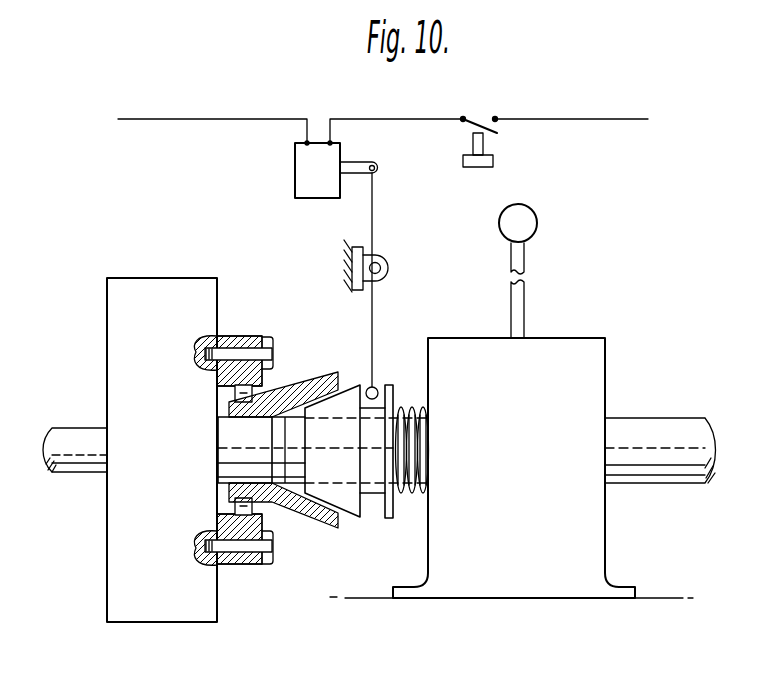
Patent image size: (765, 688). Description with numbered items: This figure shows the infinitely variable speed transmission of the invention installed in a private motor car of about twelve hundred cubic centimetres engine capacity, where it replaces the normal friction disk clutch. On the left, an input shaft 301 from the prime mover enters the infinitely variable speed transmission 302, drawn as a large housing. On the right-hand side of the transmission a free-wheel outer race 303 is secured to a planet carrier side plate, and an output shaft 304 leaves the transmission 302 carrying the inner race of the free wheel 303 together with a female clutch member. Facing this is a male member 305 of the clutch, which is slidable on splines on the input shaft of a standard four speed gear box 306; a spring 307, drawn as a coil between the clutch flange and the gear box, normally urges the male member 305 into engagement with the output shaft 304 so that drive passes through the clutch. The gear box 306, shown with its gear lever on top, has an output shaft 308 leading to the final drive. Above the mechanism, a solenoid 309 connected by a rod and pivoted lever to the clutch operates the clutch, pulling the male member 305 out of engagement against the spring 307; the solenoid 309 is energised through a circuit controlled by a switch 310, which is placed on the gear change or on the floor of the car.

The input shaft 301 is at (70, 433).
The infinitely variable speed transmission 302 is at (167, 326).
The free-wheel outer race 303 is at (214, 421).
The output shaft 304 is at (250, 424).
The male member 305 is at (345, 398).
The four speed gear box 306 is at (523, 407).
The spring 307 is at (421, 437).
The output shaft 308 is at (643, 427).
The solenoid 309 is at (302, 170).
The switch 310 is at (483, 143).